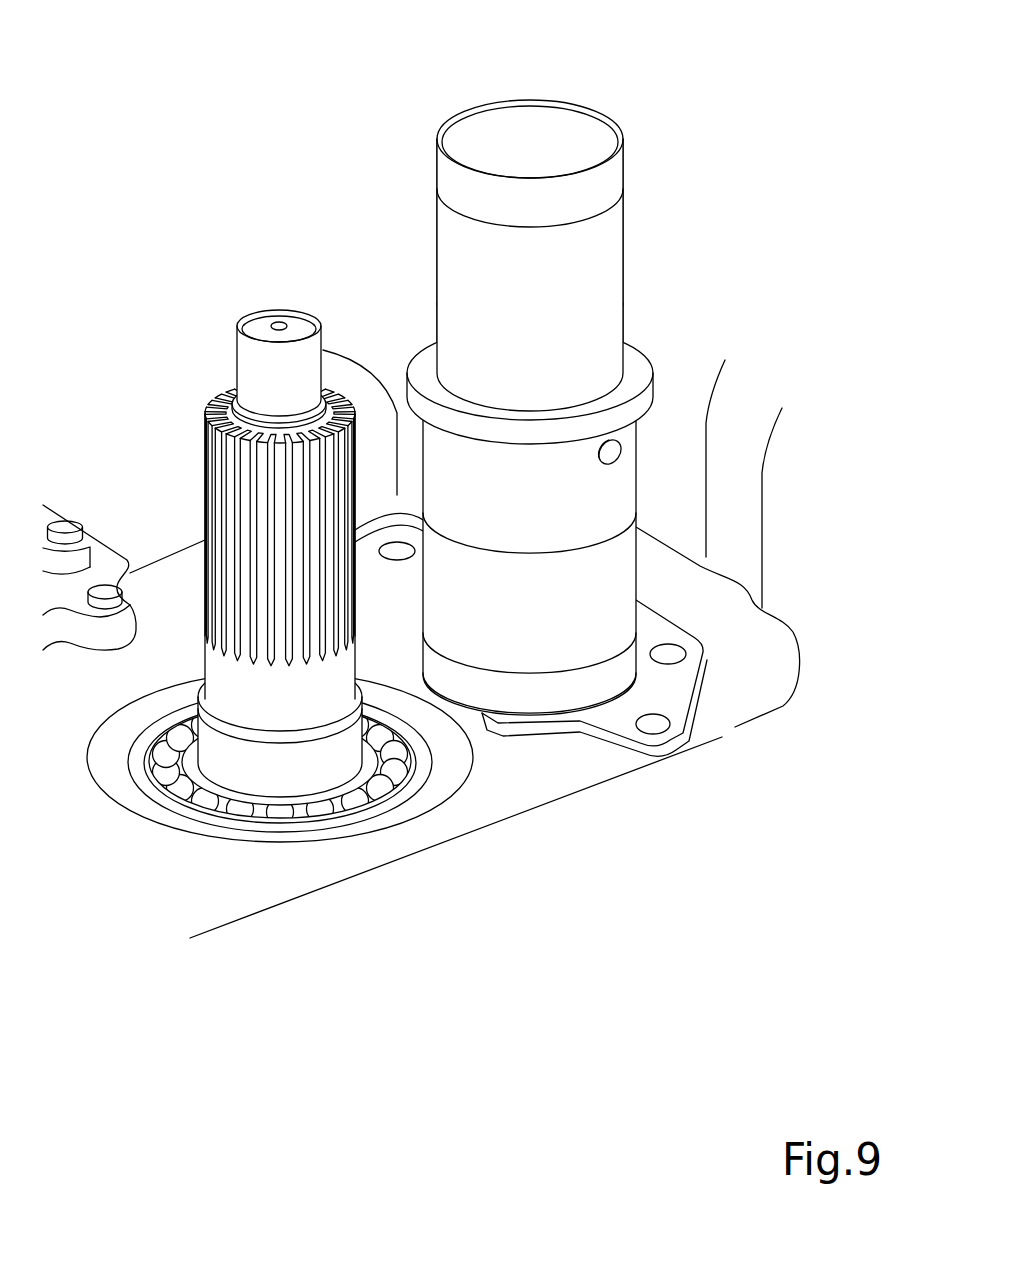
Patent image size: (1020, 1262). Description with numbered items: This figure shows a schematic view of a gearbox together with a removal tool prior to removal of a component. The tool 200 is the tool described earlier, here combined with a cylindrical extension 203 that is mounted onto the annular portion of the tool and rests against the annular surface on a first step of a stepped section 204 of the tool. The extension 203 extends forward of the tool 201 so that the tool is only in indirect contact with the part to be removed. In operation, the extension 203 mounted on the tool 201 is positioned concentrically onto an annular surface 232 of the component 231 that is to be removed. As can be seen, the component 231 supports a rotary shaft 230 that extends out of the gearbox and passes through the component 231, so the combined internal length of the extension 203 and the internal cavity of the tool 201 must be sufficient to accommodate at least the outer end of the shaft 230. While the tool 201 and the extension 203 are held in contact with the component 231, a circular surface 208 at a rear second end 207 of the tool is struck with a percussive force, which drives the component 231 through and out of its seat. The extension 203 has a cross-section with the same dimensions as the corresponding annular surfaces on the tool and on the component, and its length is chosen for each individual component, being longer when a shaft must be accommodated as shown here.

The tool 200 is at (555, 387).
The tool 201 is at (638, 313).
The extension 203 is at (648, 672).
The stepped section 204 is at (663, 366).
The rear second end 207 is at (622, 110).
The circular surface 208 is at (532, 118).
The rotary shaft 230 is at (190, 422).
The component 231 is at (193, 843).
The annular surface 232 is at (412, 773).